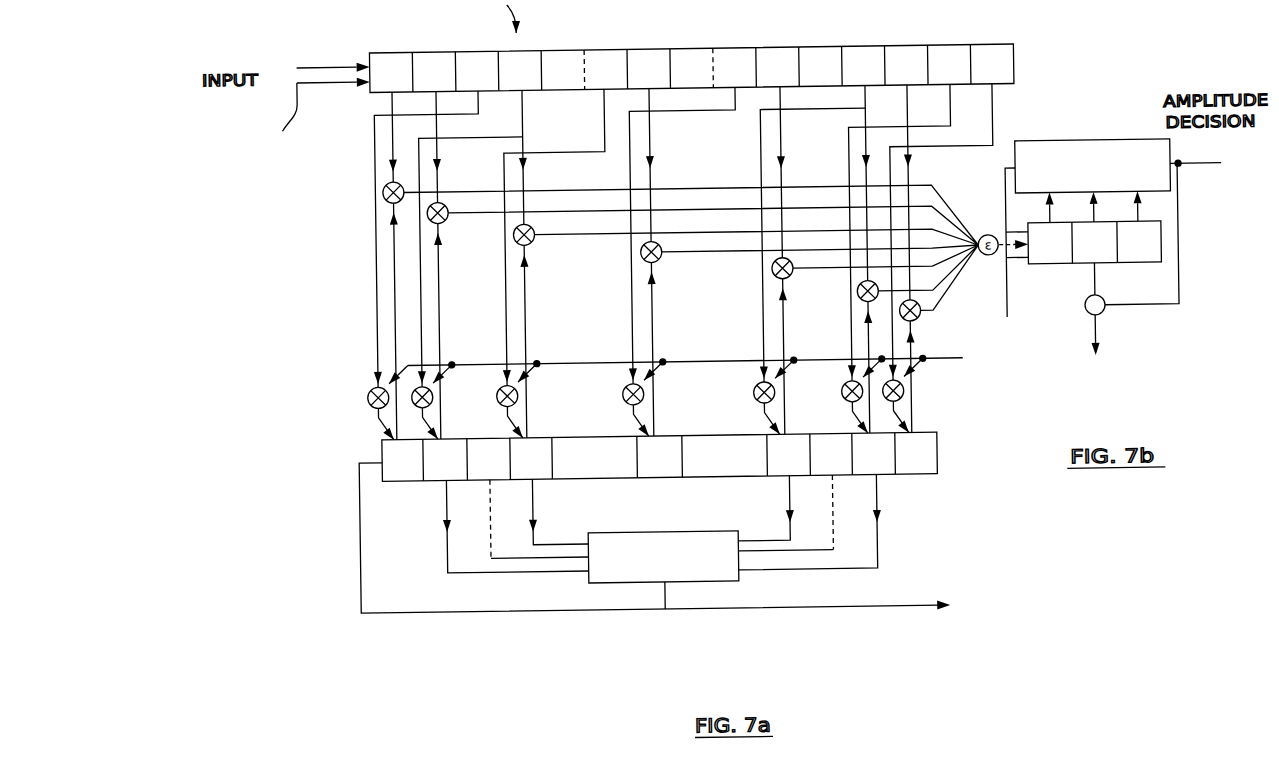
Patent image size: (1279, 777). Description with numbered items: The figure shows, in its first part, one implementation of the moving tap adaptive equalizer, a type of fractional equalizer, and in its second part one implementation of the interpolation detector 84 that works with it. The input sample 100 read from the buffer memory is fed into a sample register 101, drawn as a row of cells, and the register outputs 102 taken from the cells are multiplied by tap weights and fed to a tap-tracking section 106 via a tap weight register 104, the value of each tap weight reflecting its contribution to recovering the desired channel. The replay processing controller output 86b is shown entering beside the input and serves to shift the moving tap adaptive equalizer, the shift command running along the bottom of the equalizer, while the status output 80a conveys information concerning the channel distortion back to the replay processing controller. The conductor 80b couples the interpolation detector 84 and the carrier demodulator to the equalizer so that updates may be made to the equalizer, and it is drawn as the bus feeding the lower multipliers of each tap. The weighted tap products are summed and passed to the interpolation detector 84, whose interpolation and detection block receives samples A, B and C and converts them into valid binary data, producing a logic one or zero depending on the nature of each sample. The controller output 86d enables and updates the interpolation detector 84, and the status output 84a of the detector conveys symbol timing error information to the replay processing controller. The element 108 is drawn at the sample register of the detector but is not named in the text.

In FIG. 7a, the input sample 100 is at (337, 67).
In FIG. 7a, the output of replay processing controller 86b is at (317, 120).
In FIG. 7a, the sample register 101 is at (1017, 86).
In FIG. 7a, the register outputs 102 is at (432, 109).
In FIG. 7a, the tap weight register 104 is at (912, 482).
In FIG. 7a, the tap-tracking section 106 is at (733, 587).
In FIG. 7a, the status output 80a is at (810, 613).
In FIG. 7a, the conductor 80b is at (943, 370).
In FIG. 7b, the output of replay processing controller 86d is at (1002, 301).
In FIG. 7b, the interpolation detector 84 is at (1091, 143).
In FIG. 7b, the status output 84a is at (1097, 340).
In FIG. 7b, the amplitude decision register 108 is at (1134, 281).